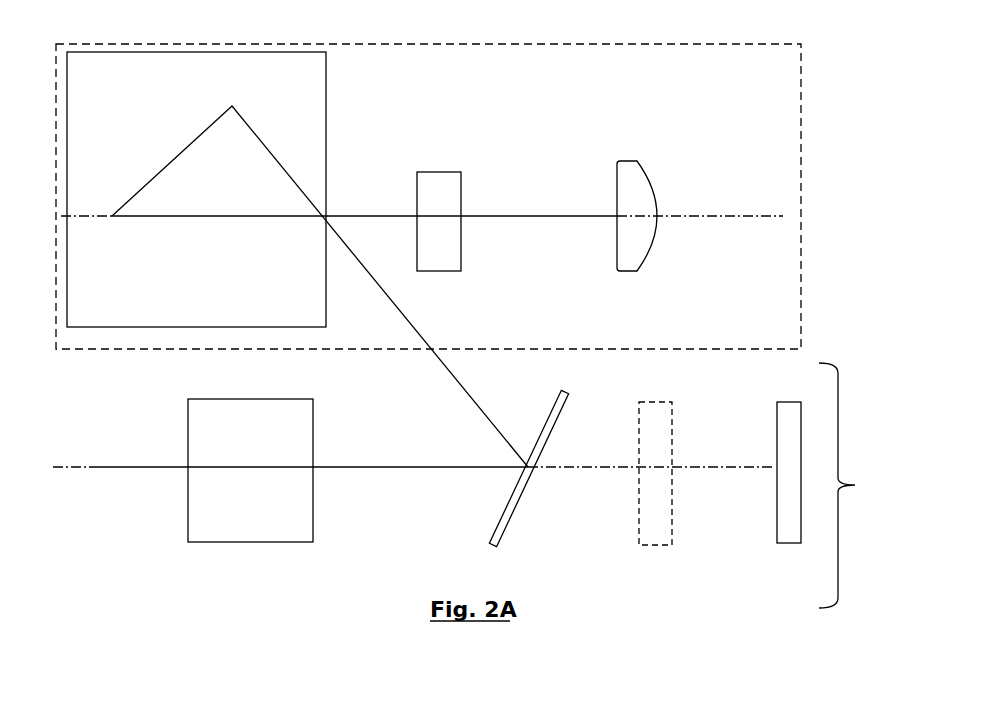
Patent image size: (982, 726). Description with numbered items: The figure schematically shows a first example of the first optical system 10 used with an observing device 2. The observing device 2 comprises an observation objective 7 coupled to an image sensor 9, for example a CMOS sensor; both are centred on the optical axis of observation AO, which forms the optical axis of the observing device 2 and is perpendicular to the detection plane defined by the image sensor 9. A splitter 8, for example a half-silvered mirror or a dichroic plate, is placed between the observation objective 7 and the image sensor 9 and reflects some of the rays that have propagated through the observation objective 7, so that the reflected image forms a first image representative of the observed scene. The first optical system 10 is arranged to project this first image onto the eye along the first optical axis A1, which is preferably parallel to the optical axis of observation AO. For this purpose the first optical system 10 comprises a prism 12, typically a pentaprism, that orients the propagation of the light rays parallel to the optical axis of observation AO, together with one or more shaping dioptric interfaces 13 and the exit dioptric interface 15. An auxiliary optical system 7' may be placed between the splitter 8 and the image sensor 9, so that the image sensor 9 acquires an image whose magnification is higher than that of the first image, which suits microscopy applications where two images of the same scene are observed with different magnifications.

The first optical system 10 is at (603, 51).
The prism 12 is at (328, 89).
The shaping dioptric interface 13 is at (437, 202).
The exit dioptric interface 15 is at (630, 188).
The first optical axis A1 is at (693, 221).
The observation objective 7 is at (230, 458).
The splitter 8 is at (552, 422).
The auxiliary optical system 7' is at (634, 465).
The image sensor 9 is at (786, 414).
The optical axis of observation AO is at (722, 471).
The observing device 2 is at (849, 485).